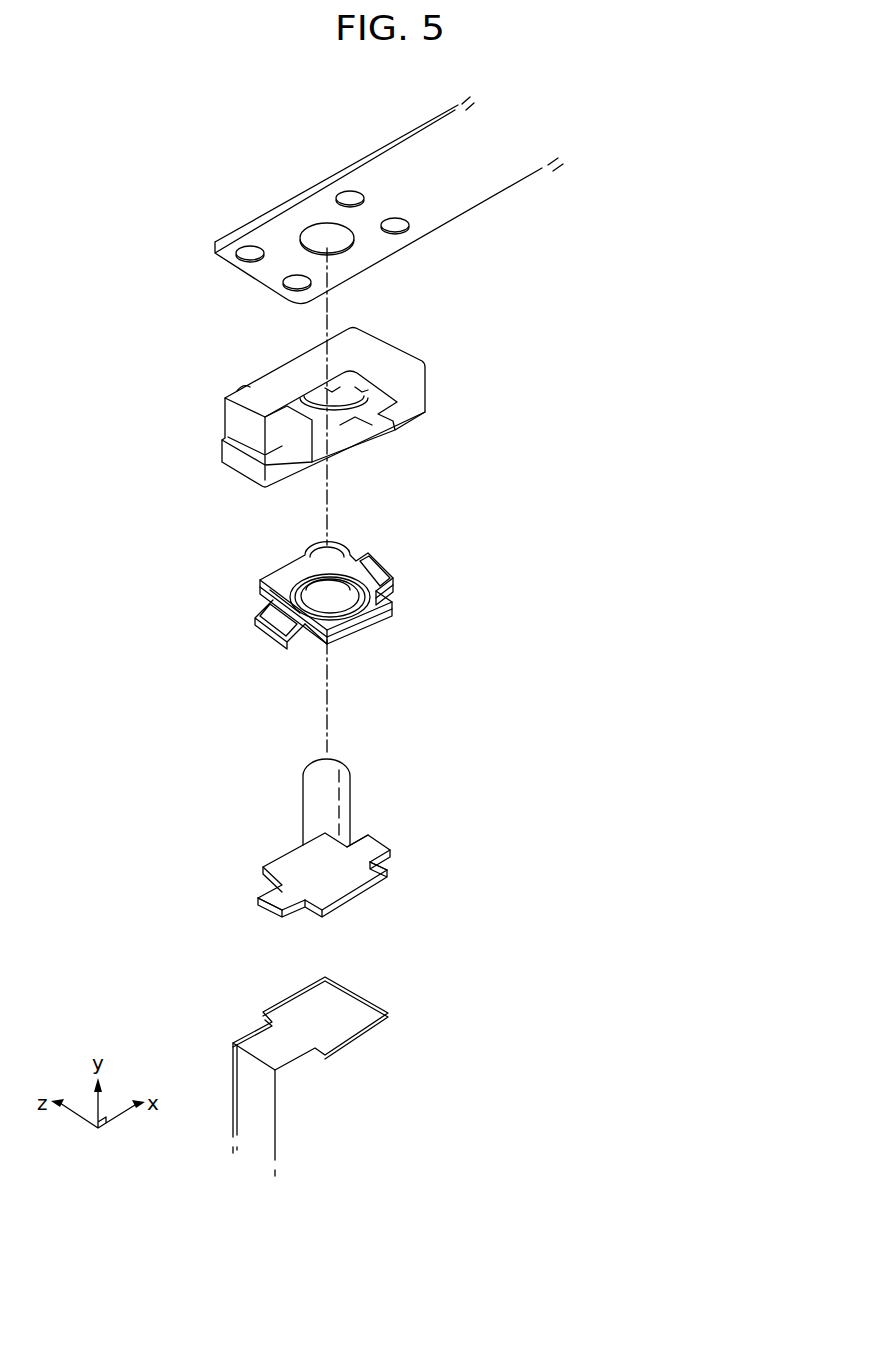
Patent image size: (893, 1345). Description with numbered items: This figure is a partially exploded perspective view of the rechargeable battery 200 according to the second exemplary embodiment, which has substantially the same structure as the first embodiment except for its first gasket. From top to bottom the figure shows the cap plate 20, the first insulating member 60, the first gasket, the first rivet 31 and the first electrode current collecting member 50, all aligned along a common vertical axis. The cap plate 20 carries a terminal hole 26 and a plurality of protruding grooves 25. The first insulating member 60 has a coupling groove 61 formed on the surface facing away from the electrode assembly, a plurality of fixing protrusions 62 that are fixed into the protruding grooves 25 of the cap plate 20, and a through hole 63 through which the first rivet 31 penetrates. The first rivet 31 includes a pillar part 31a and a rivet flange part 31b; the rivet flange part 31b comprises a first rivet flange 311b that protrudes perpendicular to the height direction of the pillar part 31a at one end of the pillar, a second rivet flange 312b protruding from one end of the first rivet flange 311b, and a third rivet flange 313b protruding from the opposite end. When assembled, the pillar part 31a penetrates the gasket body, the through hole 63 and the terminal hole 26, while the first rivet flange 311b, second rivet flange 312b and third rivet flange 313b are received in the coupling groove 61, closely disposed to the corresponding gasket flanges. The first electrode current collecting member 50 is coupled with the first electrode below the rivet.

The rechargeable battery 200 is at (122, 168).
The cap plate 20 is at (252, 205).
The protruding grooves 25 is at (250, 256).
The terminal hole 26 is at (317, 237).
The first insulating member 60 is at (440, 353).
The coupling groove 61 is at (366, 430).
The fixing protrusions 62 is at (240, 385).
The through hole 63 is at (320, 400).
The first rivet 31 is at (225, 863).
The pillar part 31a is at (315, 803).
The rivet flange part 31b is at (502, 820).
The first rivet flange 311b is at (387, 867).
The second rivet flange 312b is at (285, 903).
The third rivet flange 313b is at (383, 840).
The first electrode current collecting member 50 is at (388, 988).